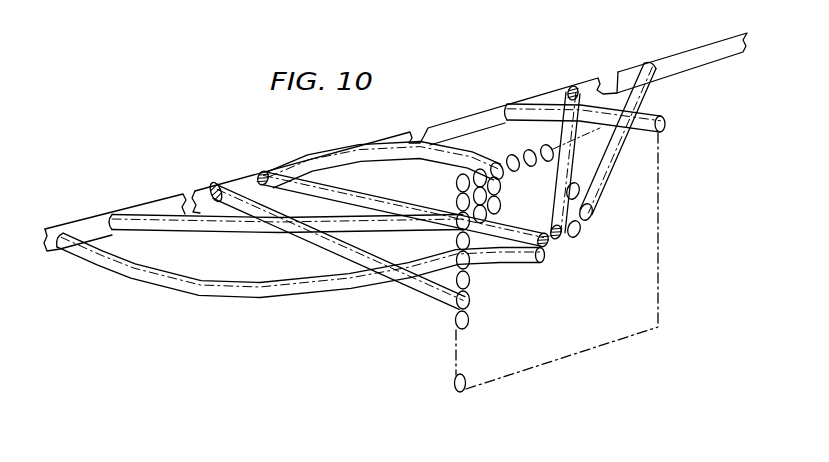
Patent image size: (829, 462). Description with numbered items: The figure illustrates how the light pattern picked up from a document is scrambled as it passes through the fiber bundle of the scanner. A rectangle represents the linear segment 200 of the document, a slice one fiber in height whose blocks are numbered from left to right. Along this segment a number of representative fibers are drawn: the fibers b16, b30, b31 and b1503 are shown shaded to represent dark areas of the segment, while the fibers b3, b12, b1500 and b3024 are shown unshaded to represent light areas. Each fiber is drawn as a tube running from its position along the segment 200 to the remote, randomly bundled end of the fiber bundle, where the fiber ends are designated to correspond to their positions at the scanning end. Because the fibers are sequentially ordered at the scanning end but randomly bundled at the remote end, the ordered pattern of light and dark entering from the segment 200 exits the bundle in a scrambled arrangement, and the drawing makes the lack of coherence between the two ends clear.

The linear segment of a document 200 is at (386, 143).
The fiber b3 is at (67, 228).
The fiber b12 is at (121, 217).
The fiber b16 is at (213, 184).
The fiber b30 is at (263, 173).
The fiber b31 is at (299, 164).
The fiber b1500 is at (508, 110).
The fiber b1503 is at (573, 89).
The fiber b3024 is at (643, 62).